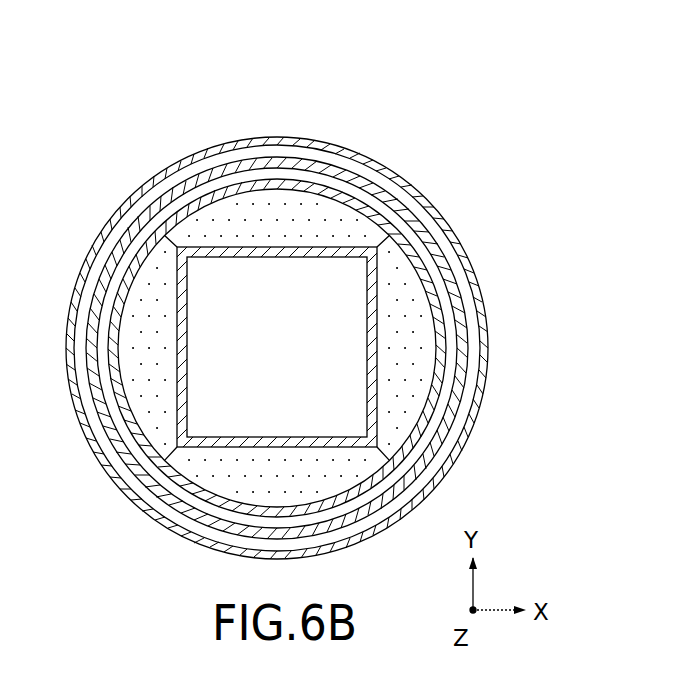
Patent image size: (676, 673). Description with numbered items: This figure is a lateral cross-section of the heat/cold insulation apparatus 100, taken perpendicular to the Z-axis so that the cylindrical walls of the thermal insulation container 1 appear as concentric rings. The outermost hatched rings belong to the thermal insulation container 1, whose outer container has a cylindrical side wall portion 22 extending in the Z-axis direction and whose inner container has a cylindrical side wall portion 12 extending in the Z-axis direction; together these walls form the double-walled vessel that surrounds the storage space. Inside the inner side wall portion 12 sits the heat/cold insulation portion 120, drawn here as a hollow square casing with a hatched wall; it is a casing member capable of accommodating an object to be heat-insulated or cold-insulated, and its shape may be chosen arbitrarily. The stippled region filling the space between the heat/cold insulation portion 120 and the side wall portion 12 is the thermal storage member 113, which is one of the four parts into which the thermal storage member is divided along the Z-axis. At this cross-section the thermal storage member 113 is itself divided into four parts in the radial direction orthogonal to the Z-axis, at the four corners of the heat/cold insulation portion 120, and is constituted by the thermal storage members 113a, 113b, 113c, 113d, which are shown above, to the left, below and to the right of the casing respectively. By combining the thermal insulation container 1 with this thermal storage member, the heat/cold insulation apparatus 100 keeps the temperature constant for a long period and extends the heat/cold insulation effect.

The thermal insulation container 1 is at (475, 127).
The heat/cold insulation apparatus 100 is at (300, 284).
The side wall portion 12 is at (260, 176).
The side wall portion 22 is at (302, 152).
The thermal storage member 113 is at (279, 289).
The thermal storage member 113a is at (310, 226).
The thermal storage member 113b is at (172, 358).
The thermal storage member 113c is at (310, 491).
The thermal storage member 113d is at (436, 358).
The heat/cold insulation portion 120 is at (296, 358).